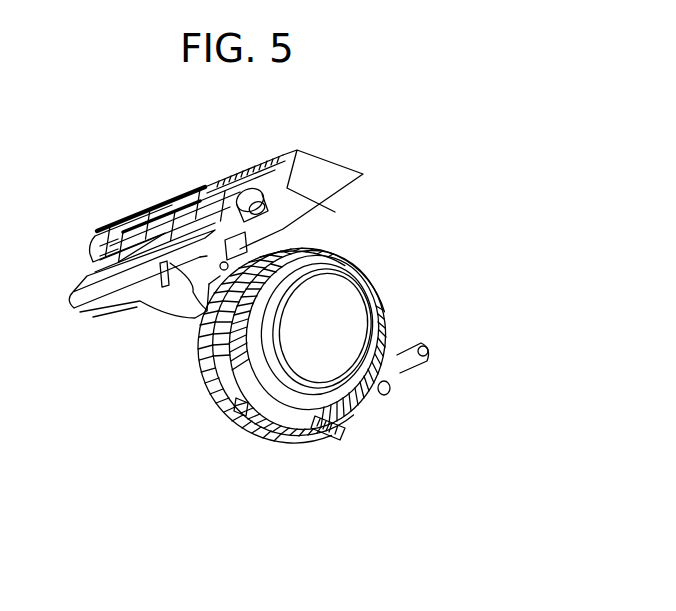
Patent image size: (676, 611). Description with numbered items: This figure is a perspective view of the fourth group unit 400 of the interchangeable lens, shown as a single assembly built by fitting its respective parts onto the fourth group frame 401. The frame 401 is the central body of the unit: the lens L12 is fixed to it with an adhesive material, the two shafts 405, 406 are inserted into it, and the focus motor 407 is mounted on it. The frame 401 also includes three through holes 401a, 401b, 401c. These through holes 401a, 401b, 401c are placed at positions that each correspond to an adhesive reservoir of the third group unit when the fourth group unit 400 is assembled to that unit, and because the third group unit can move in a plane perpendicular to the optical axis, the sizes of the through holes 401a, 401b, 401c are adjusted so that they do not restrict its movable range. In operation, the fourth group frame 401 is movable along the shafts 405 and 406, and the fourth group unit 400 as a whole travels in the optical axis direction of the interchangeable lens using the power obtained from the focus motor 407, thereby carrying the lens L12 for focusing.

The fourth group unit 400 is at (299, 357).
The fourth group frame 401 is at (292, 412).
The through hole 401a is at (239, 356).
The through hole 401b is at (347, 259).
The through hole 401c is at (332, 421).
The shaft 405 is at (173, 266).
The shaft 406 is at (428, 347).
The focus motor 407 is at (102, 245).
The lens L12 is at (335, 318).